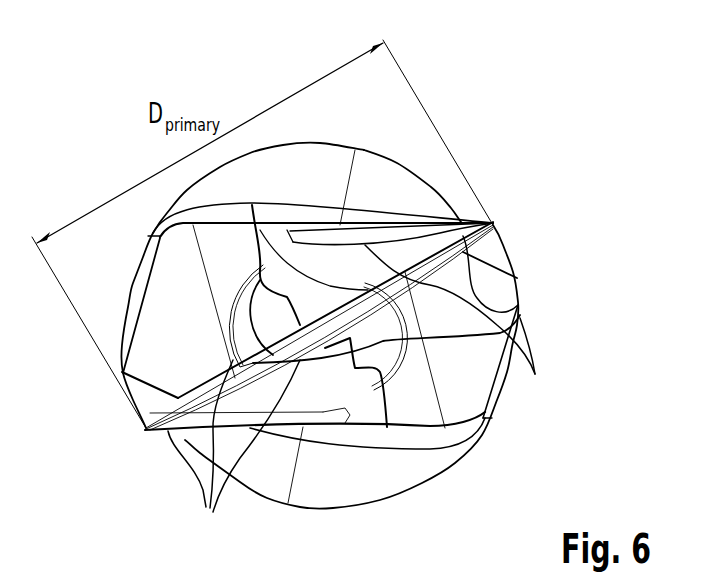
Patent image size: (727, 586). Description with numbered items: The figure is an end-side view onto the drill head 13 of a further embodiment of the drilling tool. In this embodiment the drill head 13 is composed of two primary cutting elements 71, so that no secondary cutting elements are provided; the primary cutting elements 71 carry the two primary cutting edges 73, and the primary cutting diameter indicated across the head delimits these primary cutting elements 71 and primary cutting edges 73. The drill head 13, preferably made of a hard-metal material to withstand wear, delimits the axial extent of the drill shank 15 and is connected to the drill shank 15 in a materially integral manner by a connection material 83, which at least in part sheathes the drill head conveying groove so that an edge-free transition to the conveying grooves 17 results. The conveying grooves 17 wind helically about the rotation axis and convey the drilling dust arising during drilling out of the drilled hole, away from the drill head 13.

The drill head 13 is at (140, 457).
The drill shank 15 is at (394, 508).
The conveying grooves 17 is at (389, 190).
The primary cutting elements 71 is at (158, 310).
The primary cutting edges 73 is at (358, 388).
The connection material 83 is at (133, 417).